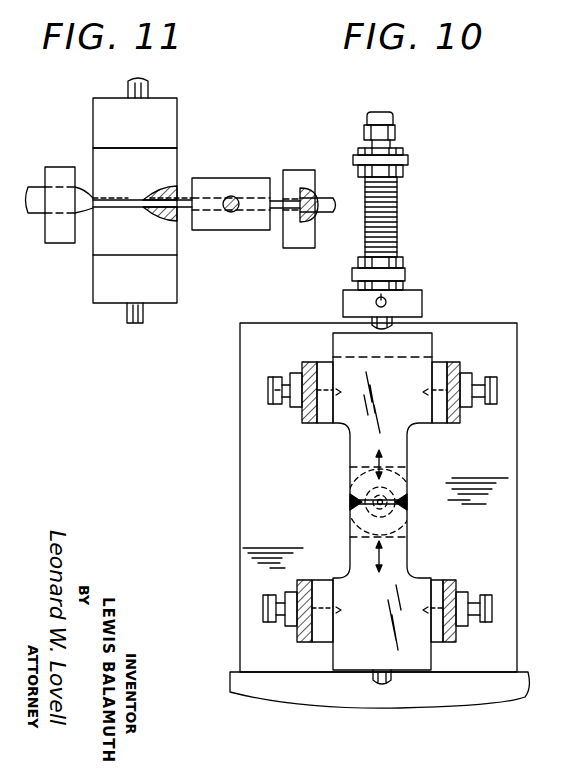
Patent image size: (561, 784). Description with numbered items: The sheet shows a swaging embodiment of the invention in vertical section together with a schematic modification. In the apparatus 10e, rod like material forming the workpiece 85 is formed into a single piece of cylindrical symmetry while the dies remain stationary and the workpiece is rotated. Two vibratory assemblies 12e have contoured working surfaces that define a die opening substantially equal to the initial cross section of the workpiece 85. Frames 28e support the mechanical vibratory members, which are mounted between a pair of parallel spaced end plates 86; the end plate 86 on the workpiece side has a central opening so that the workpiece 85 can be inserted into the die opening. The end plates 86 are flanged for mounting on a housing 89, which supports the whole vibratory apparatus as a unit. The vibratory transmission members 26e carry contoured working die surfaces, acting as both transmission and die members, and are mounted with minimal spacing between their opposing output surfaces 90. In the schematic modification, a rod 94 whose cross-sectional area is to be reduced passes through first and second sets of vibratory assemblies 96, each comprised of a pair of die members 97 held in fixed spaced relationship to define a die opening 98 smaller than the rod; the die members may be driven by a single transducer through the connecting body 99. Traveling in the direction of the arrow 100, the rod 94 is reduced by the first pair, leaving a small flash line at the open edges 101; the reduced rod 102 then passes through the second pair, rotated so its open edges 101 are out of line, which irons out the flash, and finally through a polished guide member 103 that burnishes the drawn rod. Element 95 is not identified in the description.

In FIG. 10, the apparatus 10e is at (353, 429).
In FIG. 10, the vibratory assemblies 12e is at (404, 231).
In FIG. 10, the vibratory transmission members 26e is at (418, 346).
In FIG. 10, the frames 28e is at (460, 415).
In FIG. 10, the workpiece 85 is at (387, 504).
In FIG. 10, the end plates 86 is at (490, 337).
In FIG. 10, the housing 89 is at (456, 702).
In FIG. 10, the output surfaces 90 is at (352, 506).
In FIG. 11, the rod 94 is at (90, 225).
In FIG. 11, the end block 95 is at (58, 167).
In FIG. 11, the vibratory assemblies 96 is at (177, 135).
In FIG. 11, the die members 97 is at (177, 110).
In FIG. 11, the die opening 98 is at (165, 202).
In FIG. 11, the connecting body 99 is at (146, 80).
In FIG. 11, the arrow 100 is at (326, 192).
In FIG. 11, the open edges 101 is at (123, 207).
In FIG. 11, the reduced rod 102 is at (322, 220).
In FIG. 11, the polished guide member 103 is at (220, 236).